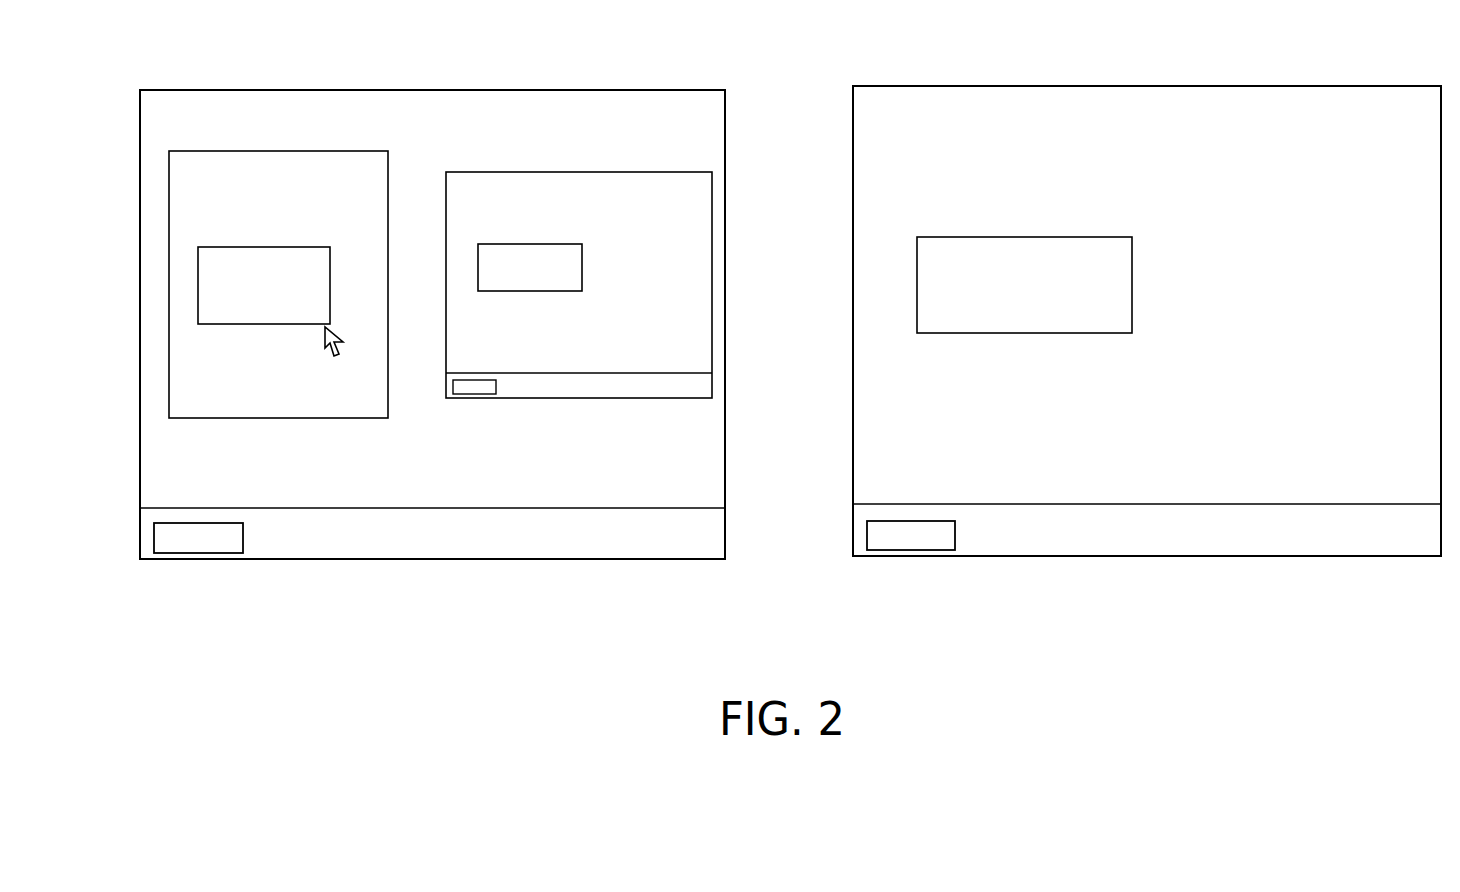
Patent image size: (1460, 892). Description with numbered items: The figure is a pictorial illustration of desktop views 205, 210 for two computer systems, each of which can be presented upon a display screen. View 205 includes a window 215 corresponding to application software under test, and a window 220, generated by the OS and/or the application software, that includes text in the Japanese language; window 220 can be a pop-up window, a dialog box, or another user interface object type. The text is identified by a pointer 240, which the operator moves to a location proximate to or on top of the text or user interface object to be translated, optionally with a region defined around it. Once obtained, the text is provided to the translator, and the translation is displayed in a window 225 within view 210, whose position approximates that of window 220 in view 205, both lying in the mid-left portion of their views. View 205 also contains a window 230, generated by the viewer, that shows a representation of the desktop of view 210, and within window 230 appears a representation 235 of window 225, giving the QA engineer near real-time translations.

The desktop view 205 is at (632, 88).
The desktop view 210 is at (1343, 85).
The window 215 is at (204, 150).
The window 220 is at (198, 271).
The window 225 is at (917, 240).
The window 230 is at (712, 251).
The representation 235 is at (582, 281).
The pointer 240 is at (325, 343).